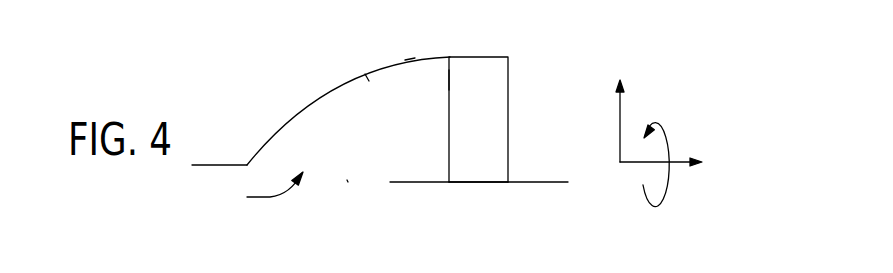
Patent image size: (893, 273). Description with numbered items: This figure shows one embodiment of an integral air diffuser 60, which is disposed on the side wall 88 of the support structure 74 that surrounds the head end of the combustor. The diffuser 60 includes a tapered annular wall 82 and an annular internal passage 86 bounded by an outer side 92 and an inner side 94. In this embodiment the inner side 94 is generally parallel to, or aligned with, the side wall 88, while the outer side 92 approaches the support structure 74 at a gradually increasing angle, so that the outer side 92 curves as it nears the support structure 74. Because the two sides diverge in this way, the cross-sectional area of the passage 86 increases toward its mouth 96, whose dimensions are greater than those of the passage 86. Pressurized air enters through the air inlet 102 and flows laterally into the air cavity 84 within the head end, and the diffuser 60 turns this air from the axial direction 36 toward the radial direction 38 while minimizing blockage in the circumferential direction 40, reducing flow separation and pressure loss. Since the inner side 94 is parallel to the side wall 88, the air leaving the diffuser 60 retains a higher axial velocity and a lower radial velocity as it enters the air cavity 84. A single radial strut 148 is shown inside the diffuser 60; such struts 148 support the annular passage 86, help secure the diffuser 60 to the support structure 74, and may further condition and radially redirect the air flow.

The axial direction 36 is at (680, 165).
The radial direction 38 is at (618, 125).
The circumferential direction 40 is at (668, 135).
The air diffuser 60 is at (482, 57).
The support structure 74 is at (218, 165).
The tapered annular wall 82 is at (410, 58).
The air cavity 84 is at (355, 150).
The annular internal passage 86 is at (370, 87).
The side wall 88 is at (537, 182).
The outer side 92 is at (337, 85).
The inner side 94 is at (478, 183).
The mouth 96 is at (347, 180).
The air inlet 102 is at (255, 192).
The radial strut 148 is at (452, 80).